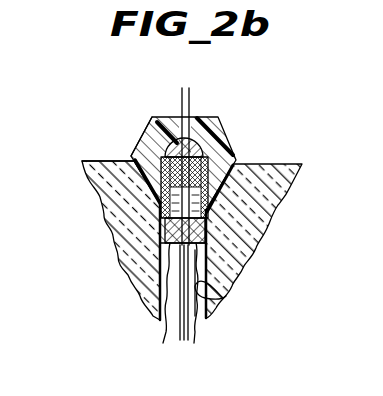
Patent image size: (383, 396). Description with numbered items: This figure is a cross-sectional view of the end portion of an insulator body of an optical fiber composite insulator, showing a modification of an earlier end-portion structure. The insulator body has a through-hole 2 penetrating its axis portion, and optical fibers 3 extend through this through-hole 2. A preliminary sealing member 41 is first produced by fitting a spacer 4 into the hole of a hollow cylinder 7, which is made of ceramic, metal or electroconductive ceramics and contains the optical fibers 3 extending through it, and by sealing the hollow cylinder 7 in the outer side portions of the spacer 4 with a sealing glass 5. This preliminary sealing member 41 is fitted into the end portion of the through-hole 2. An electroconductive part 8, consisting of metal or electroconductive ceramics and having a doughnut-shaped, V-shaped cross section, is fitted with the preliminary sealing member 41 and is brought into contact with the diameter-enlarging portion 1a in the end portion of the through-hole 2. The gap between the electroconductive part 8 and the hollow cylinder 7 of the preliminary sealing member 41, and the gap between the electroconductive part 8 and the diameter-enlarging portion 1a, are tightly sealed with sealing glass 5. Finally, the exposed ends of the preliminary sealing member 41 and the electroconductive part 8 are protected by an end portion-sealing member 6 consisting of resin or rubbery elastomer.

The diameter-enlarging portion 1a is at (143, 186).
The through-hole 2 is at (222, 297).
The optical fibers 3 is at (190, 98).
The spacer 4 is at (200, 232).
The sealing glass 5 is at (223, 184).
The end portion-sealing member 6 is at (153, 131).
The hollow cylinder 7 is at (197, 248).
The electroconductive part 8 is at (228, 153).
The preliminary sealing member 41 is at (195, 316).